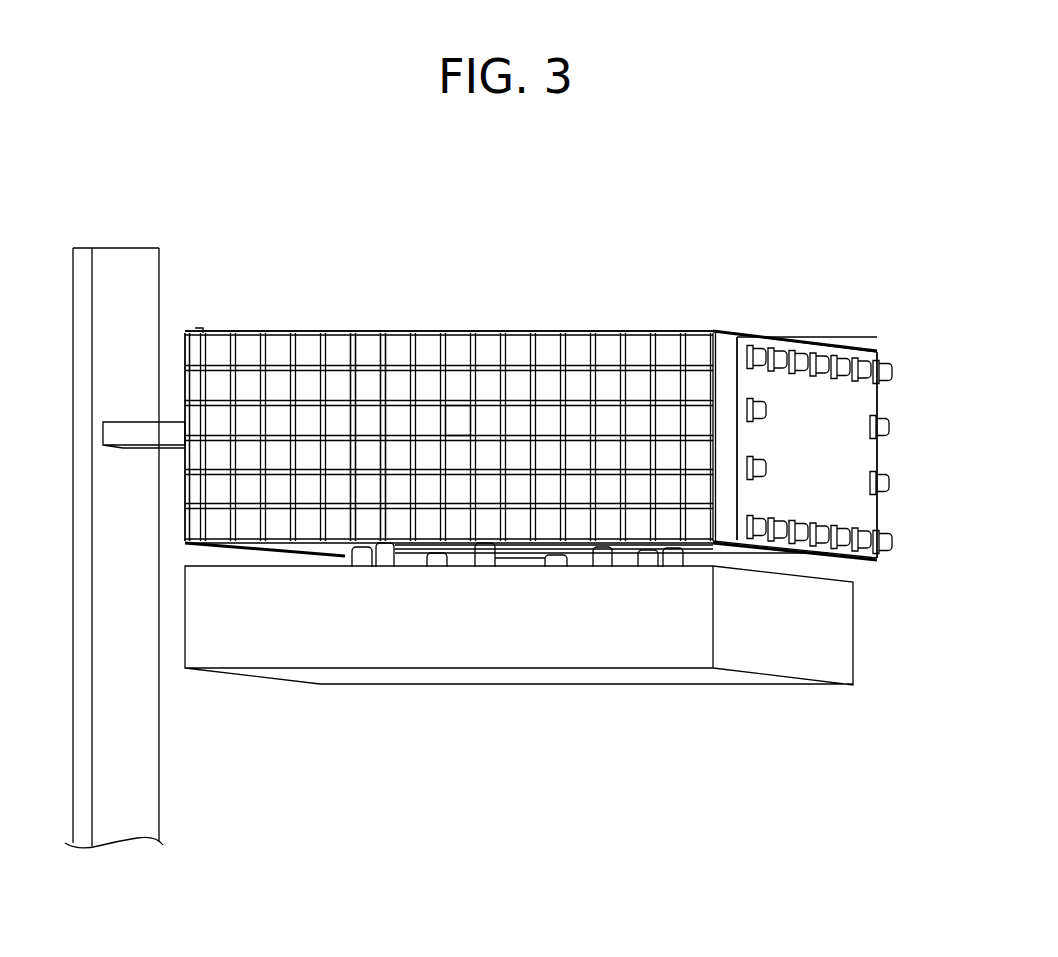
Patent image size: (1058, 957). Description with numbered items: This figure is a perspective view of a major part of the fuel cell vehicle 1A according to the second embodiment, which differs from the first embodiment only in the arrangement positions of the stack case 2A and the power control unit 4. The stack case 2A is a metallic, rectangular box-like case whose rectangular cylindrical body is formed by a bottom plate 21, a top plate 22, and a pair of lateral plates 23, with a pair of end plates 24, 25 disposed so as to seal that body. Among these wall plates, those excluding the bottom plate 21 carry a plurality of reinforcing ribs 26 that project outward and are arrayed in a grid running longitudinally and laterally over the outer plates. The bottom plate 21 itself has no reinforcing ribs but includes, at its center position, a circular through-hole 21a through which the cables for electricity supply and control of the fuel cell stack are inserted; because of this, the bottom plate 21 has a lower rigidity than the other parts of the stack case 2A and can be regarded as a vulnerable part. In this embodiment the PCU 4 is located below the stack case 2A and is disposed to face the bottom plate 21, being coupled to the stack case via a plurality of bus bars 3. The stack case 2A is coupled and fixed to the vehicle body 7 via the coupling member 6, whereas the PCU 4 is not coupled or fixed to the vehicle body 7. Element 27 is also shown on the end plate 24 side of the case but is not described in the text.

The fuel cell vehicle 1A is at (797, 251).
The stack case 2A is at (704, 332).
The bus bars 3 is at (478, 560).
The power control unit 4 is at (637, 640).
The coupling member 6 is at (143, 418).
The vehicle body 7 is at (143, 262).
The bottom plate 21 is at (338, 547).
The through-hole 21a is at (517, 566).
The top plate 22 is at (520, 333).
The lateral plates 23 is at (456, 422).
The end plate 24 is at (818, 438).
The end plate 25 is at (185, 350).
The reinforcing ribs 26 is at (400, 362).
The connector 27 is at (890, 372).